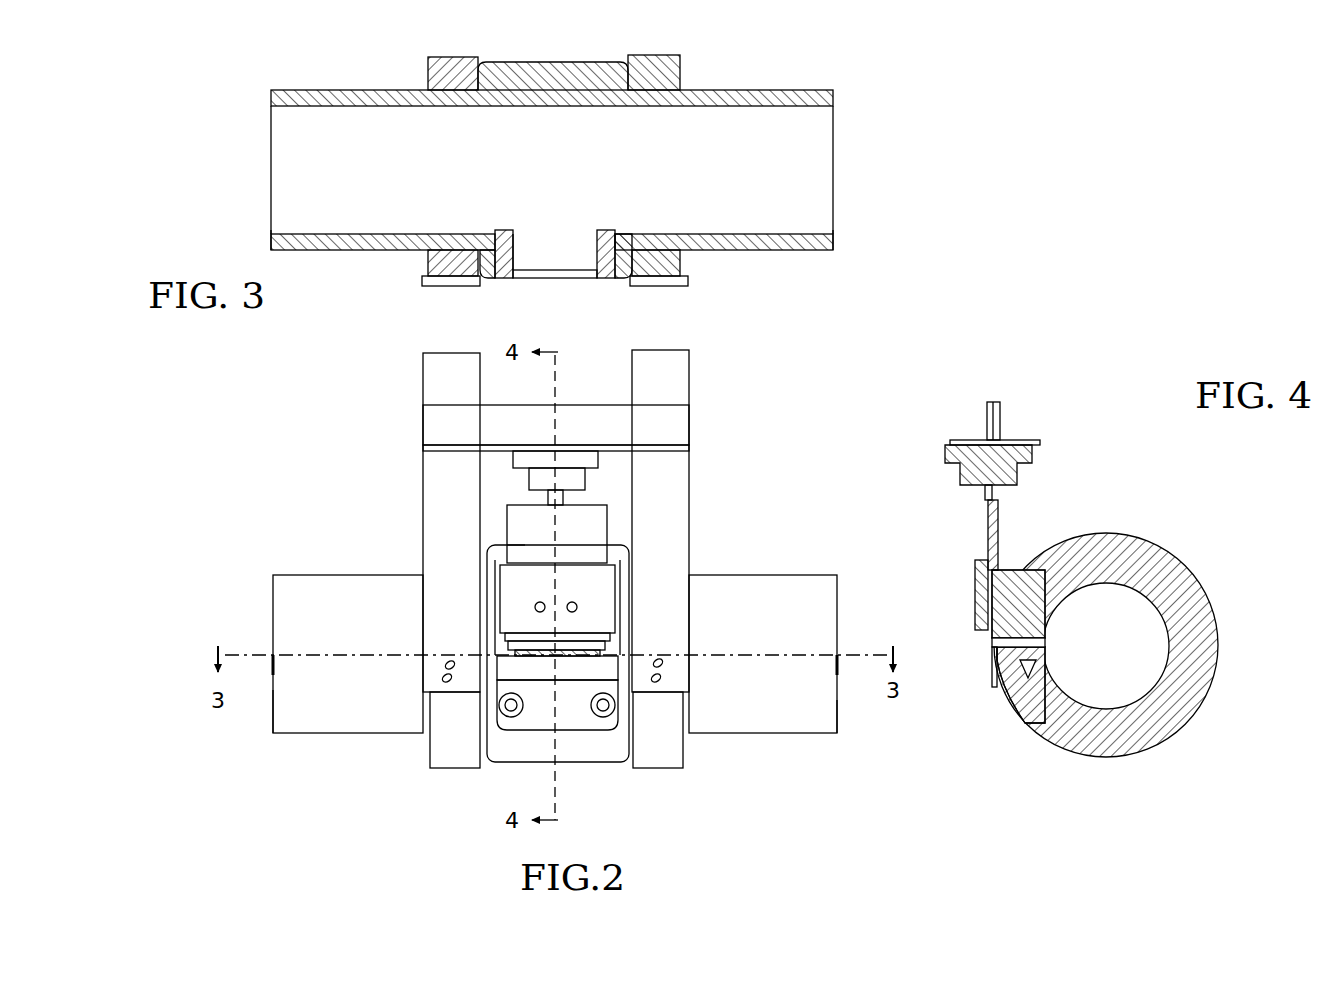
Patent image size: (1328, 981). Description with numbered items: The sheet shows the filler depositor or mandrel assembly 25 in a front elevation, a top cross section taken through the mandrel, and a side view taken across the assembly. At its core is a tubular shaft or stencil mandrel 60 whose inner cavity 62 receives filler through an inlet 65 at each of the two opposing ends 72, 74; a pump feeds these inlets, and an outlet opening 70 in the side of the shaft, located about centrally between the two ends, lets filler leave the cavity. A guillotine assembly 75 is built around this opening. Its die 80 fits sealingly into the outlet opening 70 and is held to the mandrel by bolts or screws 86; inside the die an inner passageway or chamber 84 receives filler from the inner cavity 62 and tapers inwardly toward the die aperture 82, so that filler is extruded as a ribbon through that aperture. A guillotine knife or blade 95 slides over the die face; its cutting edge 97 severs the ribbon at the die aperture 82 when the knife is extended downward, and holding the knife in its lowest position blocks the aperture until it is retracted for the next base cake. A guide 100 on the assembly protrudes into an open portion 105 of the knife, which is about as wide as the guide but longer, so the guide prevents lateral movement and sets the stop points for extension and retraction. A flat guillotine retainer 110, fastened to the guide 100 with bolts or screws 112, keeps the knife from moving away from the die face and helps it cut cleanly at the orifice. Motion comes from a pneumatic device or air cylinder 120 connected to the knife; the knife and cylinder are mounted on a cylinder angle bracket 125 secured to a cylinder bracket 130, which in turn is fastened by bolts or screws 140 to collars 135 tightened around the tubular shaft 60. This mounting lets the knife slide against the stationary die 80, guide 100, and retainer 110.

In FIG. 3, the filler depositor or mandrel assembly 25 is at (743, 62).
In FIG. 2, the filler depositor or mandrel assembly 25 is at (720, 418).
In FIG. 4, the filler depositor or mandrel assembly 25 is at (1232, 590).
In FIG. 3, the tubular shaft or stencil mandrel 60 is at (765, 250).
In FIG. 2, the tubular shaft or stencil mandrel 60 is at (760, 731).
In FIG. 4, the tubular shaft or stencil mandrel 60 is at (1187, 563).
In FIG. 3, the inner cavity 62 is at (350, 168).
In FIG. 4, the inner cavity 62 is at (1126, 633).
In FIG. 3, the inlet 65 is at (835, 118).
In FIG. 2, the inlet 65 is at (273, 622).
In FIG. 3, the outlet opening 70 is at (580, 250).
In FIG. 4, the outlet opening 70 is at (1047, 663).
In FIG. 3, the first opposing end of tubular shaft 72 is at (271, 236).
In FIG. 2, the first opposing end of tubular shaft 72 is at (273, 702).
In FIG. 3, the second opposing end of tubular shaft 74 is at (835, 236).
In FIG. 2, the second opposing end of tubular shaft 74 is at (837, 712).
In FIG. 2, the guillotine assembly 75 is at (543, 680).
In FIG. 4, the guillotine assembly 75 is at (1012, 572).
In FIG. 3, the die 80 is at (500, 272).
In FIG. 2, the die 80 is at (575, 681).
In FIG. 4, the die 80 is at (1020, 682).
In FIG. 3, the die aperture 82 is at (545, 276).
In FIG. 2, the die aperture 82 is at (605, 652).
In FIG. 4, the die aperture 82 is at (995, 656).
In FIG. 3, the inner passageway or chamber 84 is at (513, 246).
In FIG. 4, the inner passageway or chamber 84 is at (1030, 665).
In FIG. 2, the bolts or screws 86 is at (505, 708).
In FIG. 2, the guillotine knife or blade 95 is at (508, 522).
In FIG. 4, the guillotine knife or blade 95 is at (1000, 532).
In FIG. 4, the cutting edge 97 is at (992, 648).
In FIG. 2, the guide 100 is at (540, 557).
In FIG. 4, the guide 100 is at (975, 600).
In FIG. 4, the open portion 105 is at (990, 555).
In FIG. 2, the guillotine retainer 110 is at (500, 577).
In FIG. 4, the guillotine retainer 110 is at (988, 560).
In FIG. 2, the bolts or screws 112 is at (535, 607).
In FIG. 2, the pneumatic device or air cylinder 120 is at (505, 520).
In FIG. 4, the pneumatic device or air cylinder 120 is at (1035, 452).
In FIG. 2, the cylinder angle bracket 125 is at (527, 483).
In FIG. 4, the cylinder angle bracket 125 is at (1010, 440).
In FIG. 3, the cylinder bracket 130 is at (440, 283).
In FIG. 2, the cylinder bracket 130 is at (423, 372).
In FIG. 4, the cylinder bracket 130 is at (987, 412).
In FIG. 3, the collar 135 is at (428, 62).
In FIG. 2, the collar 135 is at (440, 768).
In FIG. 4, the collar 135 is at (1222, 660).
In FIG. 2, the bolts or screws 140 is at (445, 670).